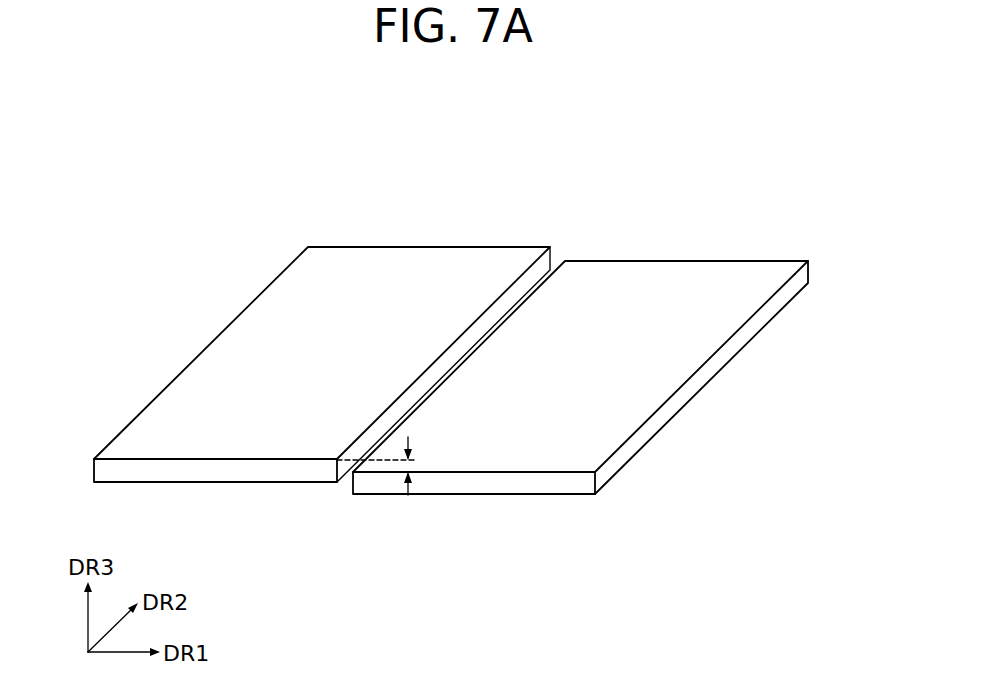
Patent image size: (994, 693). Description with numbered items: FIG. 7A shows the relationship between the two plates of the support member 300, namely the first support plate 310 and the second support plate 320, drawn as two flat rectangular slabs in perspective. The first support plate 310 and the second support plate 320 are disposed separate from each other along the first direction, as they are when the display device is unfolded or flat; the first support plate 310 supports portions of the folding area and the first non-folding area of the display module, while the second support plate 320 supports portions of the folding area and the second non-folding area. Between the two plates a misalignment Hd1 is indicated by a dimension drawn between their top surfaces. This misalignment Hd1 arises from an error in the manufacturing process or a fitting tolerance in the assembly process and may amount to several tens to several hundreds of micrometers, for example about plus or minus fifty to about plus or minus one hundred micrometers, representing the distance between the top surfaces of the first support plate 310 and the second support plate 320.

The support member 300 is at (451, 318).
The first support plate 310 is at (462, 186).
The second support plate 320 is at (467, 258).
The misalignment Hd1 is at (412, 463).